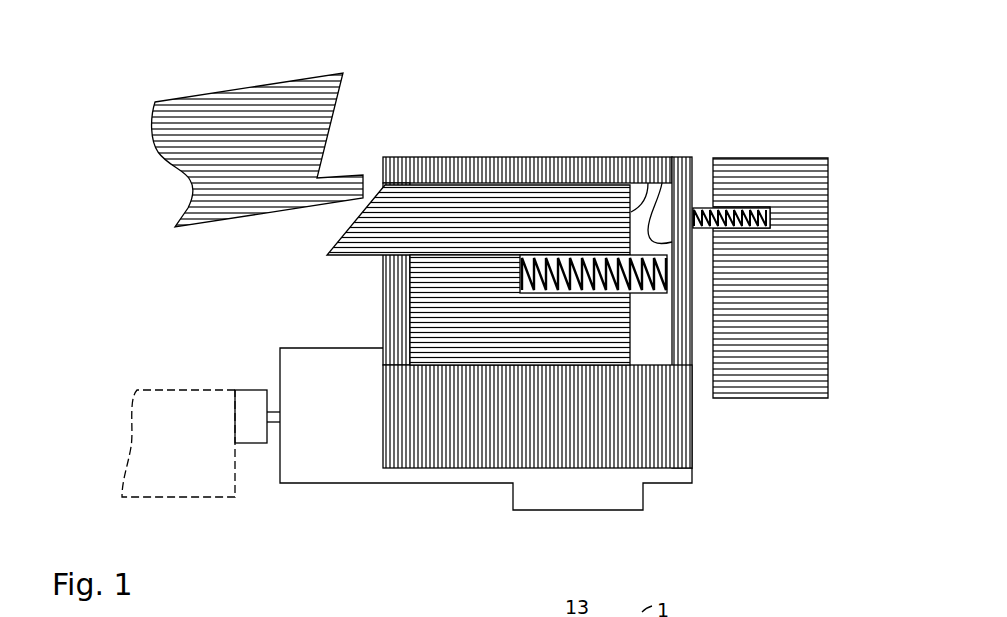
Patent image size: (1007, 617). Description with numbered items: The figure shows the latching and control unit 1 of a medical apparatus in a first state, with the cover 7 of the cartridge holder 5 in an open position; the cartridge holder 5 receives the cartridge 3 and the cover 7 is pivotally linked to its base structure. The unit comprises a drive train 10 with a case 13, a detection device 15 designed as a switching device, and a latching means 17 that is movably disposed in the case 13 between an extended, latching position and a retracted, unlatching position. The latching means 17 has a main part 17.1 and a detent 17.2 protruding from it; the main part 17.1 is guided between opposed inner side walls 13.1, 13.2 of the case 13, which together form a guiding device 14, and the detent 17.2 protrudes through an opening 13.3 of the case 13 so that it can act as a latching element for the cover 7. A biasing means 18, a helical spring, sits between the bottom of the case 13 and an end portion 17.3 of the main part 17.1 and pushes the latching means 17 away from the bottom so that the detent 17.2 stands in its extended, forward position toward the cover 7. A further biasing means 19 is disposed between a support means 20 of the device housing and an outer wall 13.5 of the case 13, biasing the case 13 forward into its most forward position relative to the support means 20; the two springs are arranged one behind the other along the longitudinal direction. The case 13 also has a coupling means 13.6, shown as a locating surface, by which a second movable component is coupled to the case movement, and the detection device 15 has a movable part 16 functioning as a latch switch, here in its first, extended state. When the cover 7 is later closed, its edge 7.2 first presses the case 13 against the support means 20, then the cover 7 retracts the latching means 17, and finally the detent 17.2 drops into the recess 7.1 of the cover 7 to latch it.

The latching and control unit 1 is at (651, 43).
The cartridge 3 is at (203, 487).
The cartridge holder 5 is at (175, 187).
The cover 7 is at (274, 130).
The recess 7.1 is at (318, 177).
The edge 7.2 is at (335, 203).
The drive train 10 is at (665, 512).
The case 13 is at (548, 296).
The inner side wall 13.1 is at (630, 211).
The inner side wall 13.2 is at (643, 365).
The opening 13.3 is at (665, 197).
The outer wall 13.5 is at (695, 432).
The coupling means 13.6 is at (537, 497).
The guiding device 14 is at (493, 371).
The detection device 15 is at (243, 381).
The movable part 16 is at (257, 437).
The latching means 17 is at (507, 259).
The main part 17.1 is at (455, 306).
The detent 17.2 is at (352, 243).
The end portion 17.3 is at (630, 327).
The biasing means 18 is at (560, 255).
The further biasing means 19 is at (745, 204).
The support means 20 is at (785, 173).